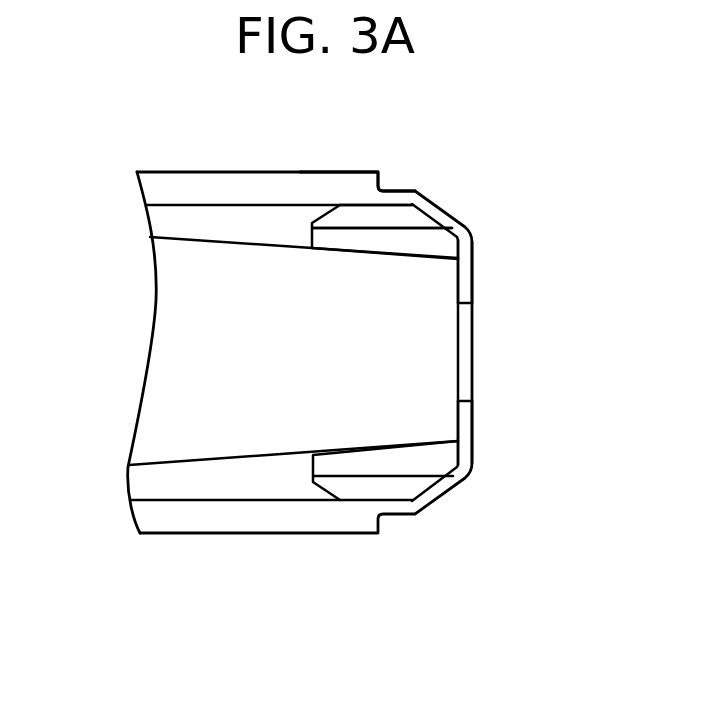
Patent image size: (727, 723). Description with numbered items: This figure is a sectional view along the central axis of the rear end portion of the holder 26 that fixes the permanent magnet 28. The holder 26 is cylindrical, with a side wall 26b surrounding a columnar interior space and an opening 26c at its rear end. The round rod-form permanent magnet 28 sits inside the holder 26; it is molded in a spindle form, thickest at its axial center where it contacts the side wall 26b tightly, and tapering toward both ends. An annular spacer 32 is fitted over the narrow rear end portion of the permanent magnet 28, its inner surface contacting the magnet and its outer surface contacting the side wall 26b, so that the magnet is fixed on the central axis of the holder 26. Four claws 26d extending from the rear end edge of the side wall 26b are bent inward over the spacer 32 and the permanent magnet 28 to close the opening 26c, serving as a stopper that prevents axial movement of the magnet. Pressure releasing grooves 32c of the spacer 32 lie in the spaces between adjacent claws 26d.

The holder 26 is at (254, 548).
The side wall 26b is at (318, 181).
The opening 26c is at (466, 388).
The claws 26d is at (472, 268).
The permanent magnet 28 is at (177, 335).
The annular spacer 32 is at (442, 243).
The pressure releasing grooves 32c is at (383, 218).